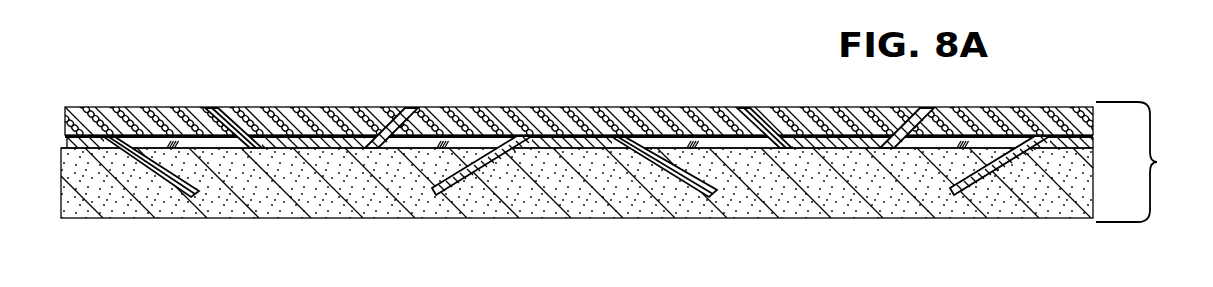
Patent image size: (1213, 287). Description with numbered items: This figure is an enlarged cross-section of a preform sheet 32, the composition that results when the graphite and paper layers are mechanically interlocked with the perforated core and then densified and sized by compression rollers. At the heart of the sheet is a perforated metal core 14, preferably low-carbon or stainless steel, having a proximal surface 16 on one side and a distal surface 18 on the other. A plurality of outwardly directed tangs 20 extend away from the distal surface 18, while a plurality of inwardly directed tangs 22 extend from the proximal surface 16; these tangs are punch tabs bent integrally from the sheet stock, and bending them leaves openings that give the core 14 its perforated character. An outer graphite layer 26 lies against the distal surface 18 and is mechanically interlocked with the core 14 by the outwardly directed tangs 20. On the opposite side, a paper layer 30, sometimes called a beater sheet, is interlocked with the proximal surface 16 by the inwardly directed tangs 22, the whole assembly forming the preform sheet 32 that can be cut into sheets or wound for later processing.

The perforated metal core layer 14 is at (474, 134).
The proximal surface 16 is at (328, 137).
The distal surface 18 is at (318, 150).
The outwardly directed tangs 20 is at (196, 196).
The inwardly directed tangs 22 is at (211, 108).
The outer graphite layer 26 is at (594, 219).
The paper layer 30 is at (661, 107).
The preform sheet 32 is at (1145, 162).